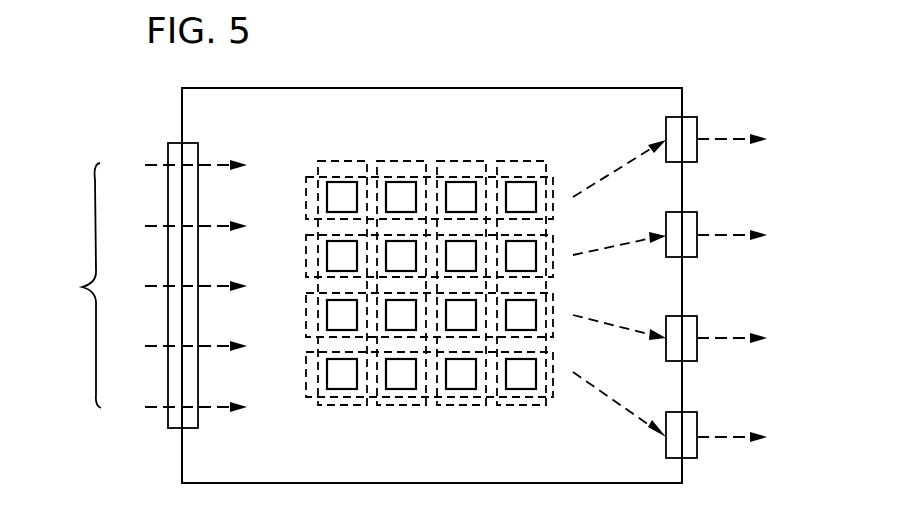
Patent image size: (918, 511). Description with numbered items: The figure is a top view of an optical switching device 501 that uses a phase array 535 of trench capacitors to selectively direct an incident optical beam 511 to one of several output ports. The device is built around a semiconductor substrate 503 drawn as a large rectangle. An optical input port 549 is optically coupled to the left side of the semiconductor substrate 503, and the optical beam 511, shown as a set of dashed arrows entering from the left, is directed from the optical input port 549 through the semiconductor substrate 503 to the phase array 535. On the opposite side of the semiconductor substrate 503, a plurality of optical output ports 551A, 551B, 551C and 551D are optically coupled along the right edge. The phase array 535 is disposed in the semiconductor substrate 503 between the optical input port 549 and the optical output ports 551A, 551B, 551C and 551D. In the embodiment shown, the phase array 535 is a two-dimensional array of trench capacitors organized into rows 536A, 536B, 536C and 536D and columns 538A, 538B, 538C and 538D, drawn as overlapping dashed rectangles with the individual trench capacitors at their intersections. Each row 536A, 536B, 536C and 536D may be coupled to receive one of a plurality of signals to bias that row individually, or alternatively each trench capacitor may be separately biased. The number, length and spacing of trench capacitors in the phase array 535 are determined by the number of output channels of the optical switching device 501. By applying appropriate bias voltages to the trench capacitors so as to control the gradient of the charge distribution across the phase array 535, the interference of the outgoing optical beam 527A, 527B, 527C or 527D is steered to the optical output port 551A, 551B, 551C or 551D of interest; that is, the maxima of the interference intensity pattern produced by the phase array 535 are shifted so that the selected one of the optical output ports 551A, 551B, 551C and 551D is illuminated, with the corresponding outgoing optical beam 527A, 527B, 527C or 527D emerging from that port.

The optical switching device 501 is at (425, 79).
The semiconductor substrate 503 is at (514, 87).
The optical beam 511 is at (145, 286).
The optical input port 549 is at (178, 143).
The phase array 535 is at (560, 155).
The row of trench capacitors 536A is at (306, 201).
The row of trench capacitors 536B is at (306, 258).
The row of trench capacitors 536C is at (306, 321).
The row of trench capacitors 536D is at (306, 380).
The column of trench capacitors 538A is at (331, 160).
The column of trench capacitors 538B is at (396, 160).
The column of trench capacitors 538C is at (461, 160).
The column of trench capacitors 538D is at (526, 160).
The optical output port 551A is at (692, 117).
The optical output port 551B is at (692, 212).
The optical output port 551C is at (692, 316).
The optical output port 551D is at (692, 412).
The outgoing optical beam 527A is at (719, 139).
The outgoing optical beam 527B is at (719, 235).
The outgoing optical beam 527C is at (719, 338).
The outgoing optical beam 527D is at (719, 437).